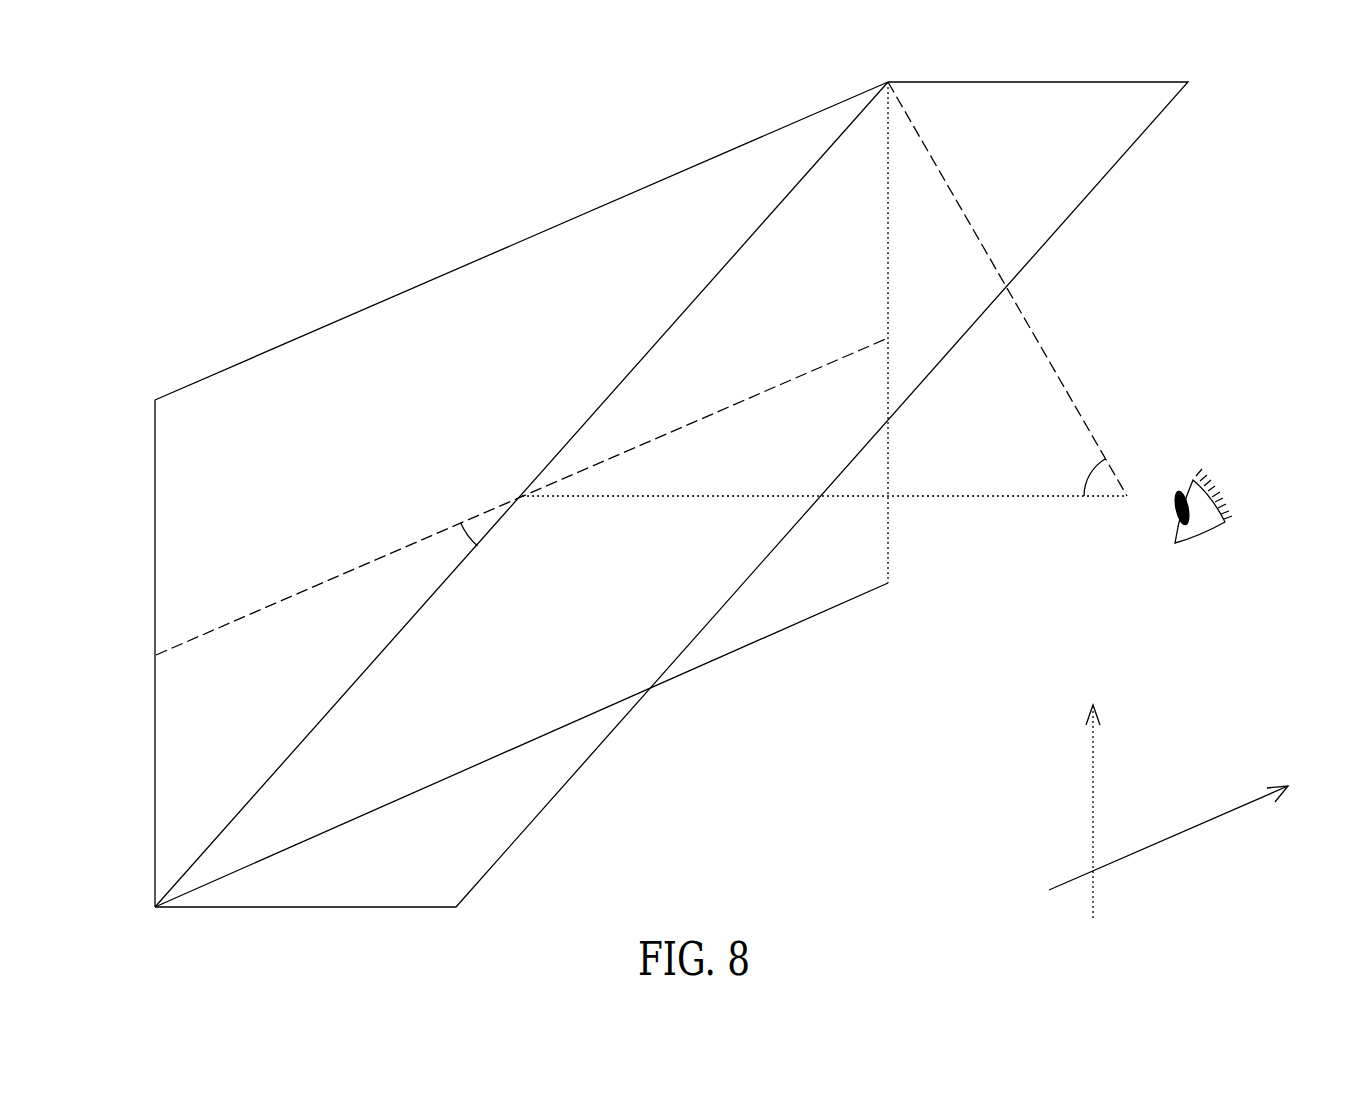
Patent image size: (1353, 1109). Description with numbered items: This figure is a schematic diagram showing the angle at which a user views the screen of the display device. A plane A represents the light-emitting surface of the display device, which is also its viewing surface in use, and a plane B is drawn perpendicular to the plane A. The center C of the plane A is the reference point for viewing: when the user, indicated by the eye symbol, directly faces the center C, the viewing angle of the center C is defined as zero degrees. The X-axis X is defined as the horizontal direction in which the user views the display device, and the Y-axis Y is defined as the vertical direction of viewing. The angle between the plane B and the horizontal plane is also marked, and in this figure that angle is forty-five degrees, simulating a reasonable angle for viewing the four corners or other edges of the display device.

The plane A is at (743, 173).
The plane B is at (280, 898).
The center of plane A C is at (641, 496).
The X-axis X is at (1183, 828).
The Y-axis Y is at (1094, 790).